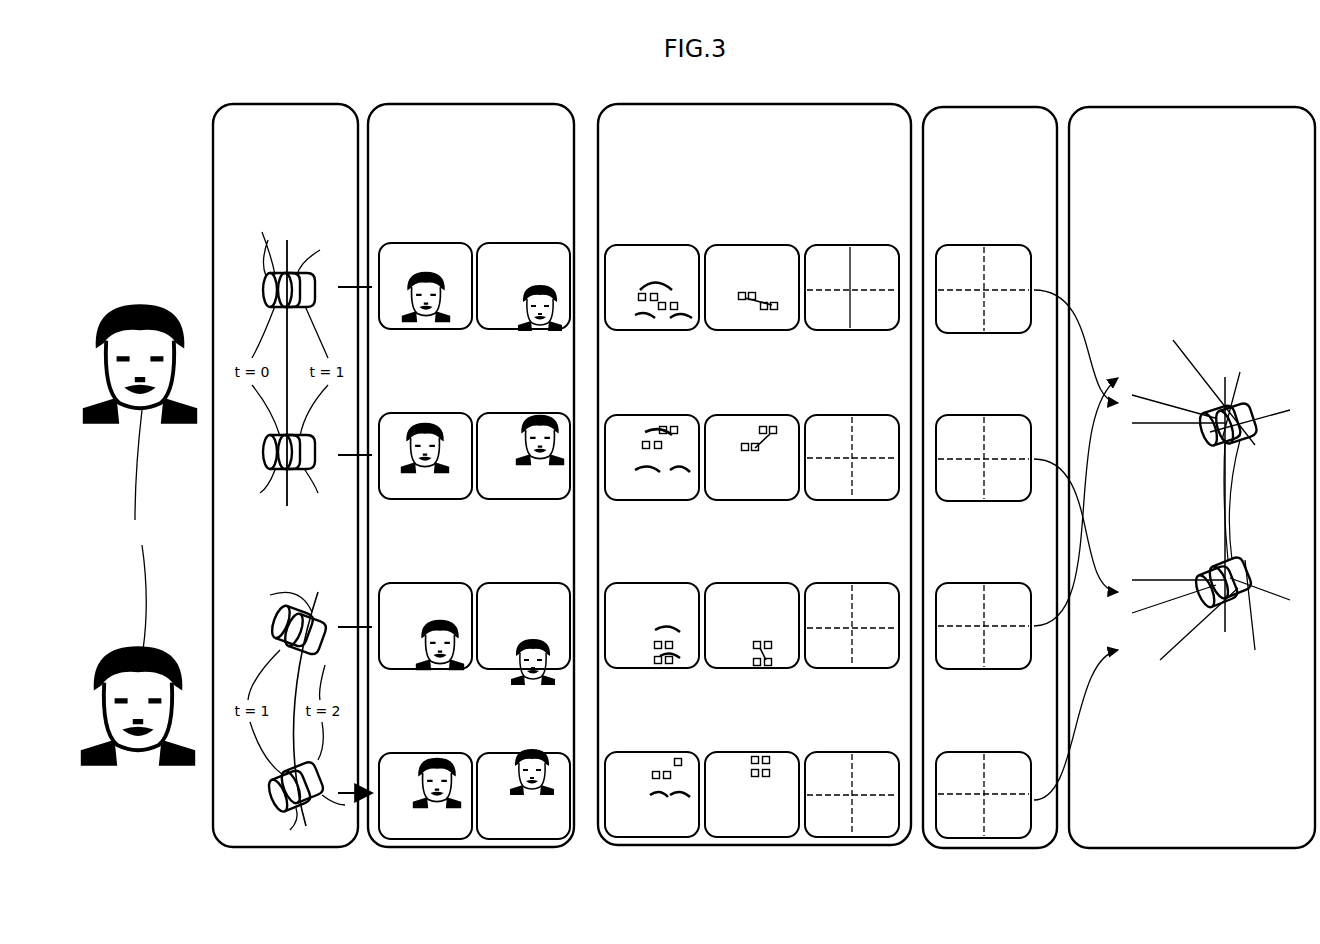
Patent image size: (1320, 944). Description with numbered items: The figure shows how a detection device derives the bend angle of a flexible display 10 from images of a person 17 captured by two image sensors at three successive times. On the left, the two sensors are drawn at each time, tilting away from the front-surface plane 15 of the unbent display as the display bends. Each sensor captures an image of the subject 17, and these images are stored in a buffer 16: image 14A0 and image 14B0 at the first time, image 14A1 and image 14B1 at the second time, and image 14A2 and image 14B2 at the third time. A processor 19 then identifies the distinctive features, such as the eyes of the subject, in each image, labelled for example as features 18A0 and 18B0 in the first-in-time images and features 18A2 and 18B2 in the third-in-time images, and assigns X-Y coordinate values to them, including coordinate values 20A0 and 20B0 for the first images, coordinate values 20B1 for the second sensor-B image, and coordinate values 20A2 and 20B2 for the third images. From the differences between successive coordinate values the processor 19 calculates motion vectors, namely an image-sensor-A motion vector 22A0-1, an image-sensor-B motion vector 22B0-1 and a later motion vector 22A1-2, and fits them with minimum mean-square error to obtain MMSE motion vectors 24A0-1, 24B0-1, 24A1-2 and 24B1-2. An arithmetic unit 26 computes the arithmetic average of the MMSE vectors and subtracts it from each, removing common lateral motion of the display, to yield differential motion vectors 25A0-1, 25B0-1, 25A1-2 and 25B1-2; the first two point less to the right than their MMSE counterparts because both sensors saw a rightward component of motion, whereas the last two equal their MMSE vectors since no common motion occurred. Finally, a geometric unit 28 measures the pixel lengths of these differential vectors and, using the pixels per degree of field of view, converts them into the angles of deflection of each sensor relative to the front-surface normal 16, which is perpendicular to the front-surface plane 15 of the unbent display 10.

The flexible display 10 is at (322, 238).
The image captured by image sensor 12A at time t=0 14A0 is at (418, 243).
The image captured by image sensor 12A at time t=1 14A1 is at (435, 583).
The image captured by image sensor 12A at time t=2 14A2 is at (500, 669).
The image captured by image sensor 12B at time t=0 14B0 is at (438, 413).
The image captured by image sensor 12B at time t=1 14B1 is at (440, 753).
The image captured by image sensor 12B at time t=2 14B2 is at (500, 753).
The front-surface plane 15 is at (288, 510).
The buffer 16 is at (468, 848).
The person 17 is at (139, 535).
The distinctive features of image 14A0 18A0 is at (640, 294).
The distinctive features of image 14A2 18A2 is at (662, 666).
The distinctive features of image 14B0 18B0 is at (660, 450).
The distinctive features of image 14B2 18B2 is at (665, 760).
The processor 19 is at (755, 846).
The coordinate values of image 14A0 20A0 is at (740, 294).
The coordinate values of image 14A2 20A2 is at (759, 667).
The coordinate values of image 14B0 20B0 is at (743, 445).
The coordinate values of image 14B1 20B1 is at (776, 427).
The coordinate values of image 14B2 20B2 is at (766, 757).
The image-sensor-A motion vector 22A0-1 is at (760, 302).
The image-sensor-B motion vector 22B0-1 is at (768, 438).
The motion vector 22A1-2 is at (770, 656).
The image-sensor-A MMSE motion vector 24A0-1 is at (862, 292).
The image-sensor-B MMSE motion vector 24B0-1 is at (864, 448).
The MMSE motion vector 24A1-2 is at (855, 634).
The MMSE motion vector 24B1-2 is at (858, 785).
The first-image-sensor differential motion vector 25A0-1 is at (985, 296).
The second-image-sensor differential motion vector 25B0-1 is at (985, 455).
The differential motion vector 25A1-2 is at (982, 640).
The differential motion vector 25B1-2 is at (978, 780).
The arithmetic unit 26 is at (980, 848).
The geometric unit 28 is at (1190, 848).